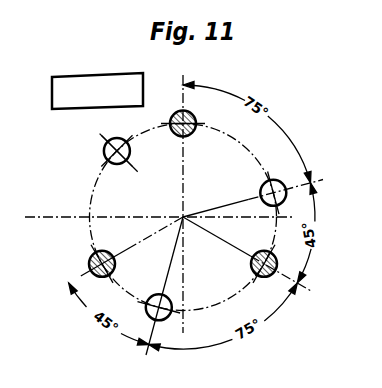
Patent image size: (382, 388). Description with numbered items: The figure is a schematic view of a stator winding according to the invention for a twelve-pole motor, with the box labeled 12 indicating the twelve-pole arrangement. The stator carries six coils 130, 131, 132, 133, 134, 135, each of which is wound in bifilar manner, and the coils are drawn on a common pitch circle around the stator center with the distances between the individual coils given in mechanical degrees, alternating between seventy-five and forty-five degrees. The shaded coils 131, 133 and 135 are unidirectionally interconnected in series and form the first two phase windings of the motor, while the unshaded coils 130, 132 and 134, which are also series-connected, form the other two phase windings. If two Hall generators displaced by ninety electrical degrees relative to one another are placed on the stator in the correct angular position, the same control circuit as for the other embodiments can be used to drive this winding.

The carrier plate / flange 12 is at (97, 91).
The coil 130 is at (260, 191).
The coil 131 is at (193, 134).
The coil 132 is at (104, 150).
The coil 133 is at (90, 260).
The coil 134 is at (171, 303).
The coil 135 is at (251, 263).